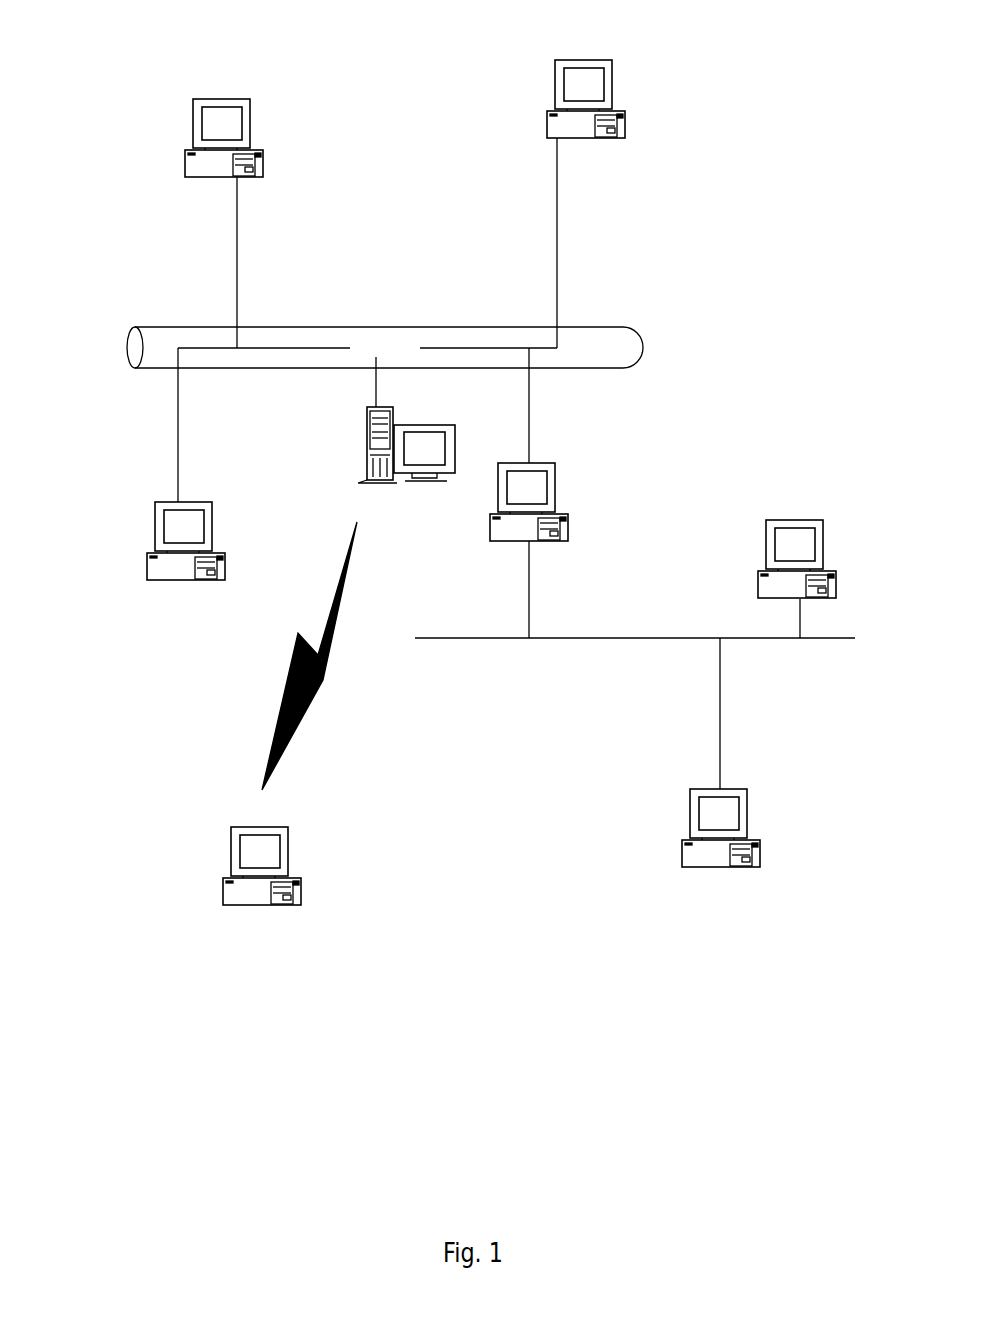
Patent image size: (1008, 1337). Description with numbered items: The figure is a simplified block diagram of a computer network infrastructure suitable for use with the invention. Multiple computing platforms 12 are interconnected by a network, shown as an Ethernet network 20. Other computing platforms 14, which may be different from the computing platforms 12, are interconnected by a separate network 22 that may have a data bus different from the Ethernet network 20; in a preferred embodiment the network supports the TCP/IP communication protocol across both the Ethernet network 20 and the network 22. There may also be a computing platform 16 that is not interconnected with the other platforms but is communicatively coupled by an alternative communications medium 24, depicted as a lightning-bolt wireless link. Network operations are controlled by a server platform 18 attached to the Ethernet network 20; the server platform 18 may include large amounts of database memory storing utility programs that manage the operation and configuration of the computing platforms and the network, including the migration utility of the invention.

The computing platforms 12 is at (185, 119).
The computing platforms 14 is at (835, 540).
The computing platforms 16 is at (318, 884).
The server platform 18 is at (358, 465).
The Ethernet network 20 is at (606, 330).
The network 22 is at (557, 640).
The alternative communications medium 24 is at (263, 713).